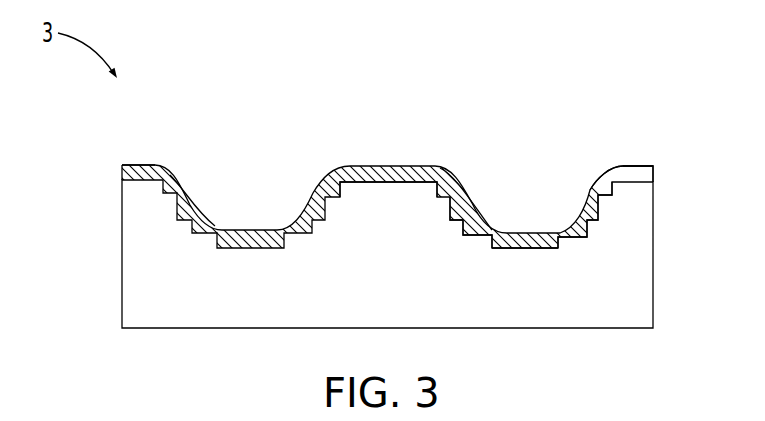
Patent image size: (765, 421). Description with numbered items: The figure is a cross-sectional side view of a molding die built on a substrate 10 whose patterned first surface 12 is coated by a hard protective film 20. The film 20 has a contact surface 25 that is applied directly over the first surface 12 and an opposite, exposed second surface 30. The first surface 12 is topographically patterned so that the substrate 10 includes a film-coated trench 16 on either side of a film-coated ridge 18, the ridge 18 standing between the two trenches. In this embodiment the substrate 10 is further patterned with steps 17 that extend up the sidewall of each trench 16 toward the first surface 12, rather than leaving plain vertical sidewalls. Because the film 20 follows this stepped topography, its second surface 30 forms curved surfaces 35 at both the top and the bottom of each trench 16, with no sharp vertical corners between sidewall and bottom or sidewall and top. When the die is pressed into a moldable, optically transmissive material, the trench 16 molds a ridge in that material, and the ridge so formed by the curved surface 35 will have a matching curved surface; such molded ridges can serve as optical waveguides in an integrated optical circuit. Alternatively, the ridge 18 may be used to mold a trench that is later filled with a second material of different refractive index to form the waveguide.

The substrate 10 is at (360, 254).
The first surface 12 is at (604, 215).
The trench 16 is at (525, 266).
The steps 17 is at (457, 253).
The ridge 18 is at (387, 242).
The protective film 20 is at (138, 141).
The contact surface 25 is at (667, 172).
The second surface 30 is at (621, 147).
The curved molding surface 35 is at (344, 173).